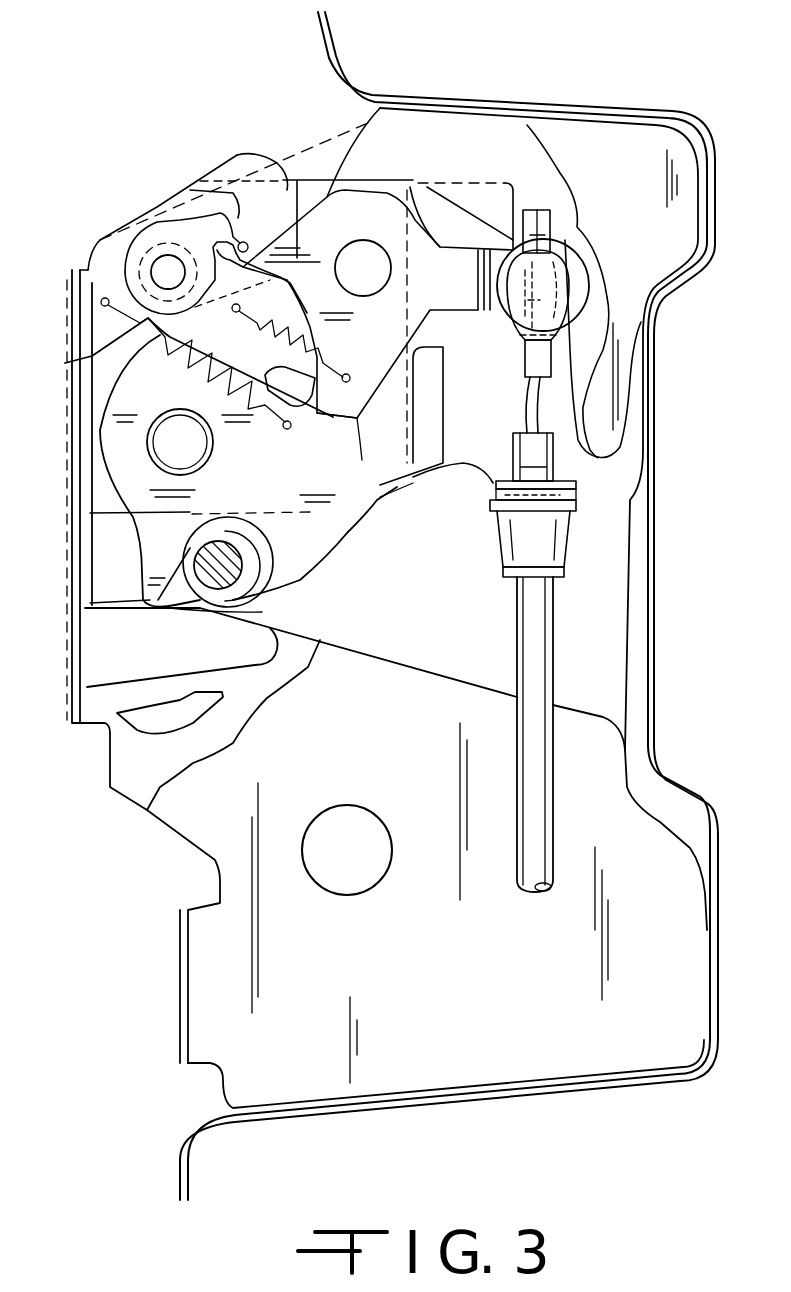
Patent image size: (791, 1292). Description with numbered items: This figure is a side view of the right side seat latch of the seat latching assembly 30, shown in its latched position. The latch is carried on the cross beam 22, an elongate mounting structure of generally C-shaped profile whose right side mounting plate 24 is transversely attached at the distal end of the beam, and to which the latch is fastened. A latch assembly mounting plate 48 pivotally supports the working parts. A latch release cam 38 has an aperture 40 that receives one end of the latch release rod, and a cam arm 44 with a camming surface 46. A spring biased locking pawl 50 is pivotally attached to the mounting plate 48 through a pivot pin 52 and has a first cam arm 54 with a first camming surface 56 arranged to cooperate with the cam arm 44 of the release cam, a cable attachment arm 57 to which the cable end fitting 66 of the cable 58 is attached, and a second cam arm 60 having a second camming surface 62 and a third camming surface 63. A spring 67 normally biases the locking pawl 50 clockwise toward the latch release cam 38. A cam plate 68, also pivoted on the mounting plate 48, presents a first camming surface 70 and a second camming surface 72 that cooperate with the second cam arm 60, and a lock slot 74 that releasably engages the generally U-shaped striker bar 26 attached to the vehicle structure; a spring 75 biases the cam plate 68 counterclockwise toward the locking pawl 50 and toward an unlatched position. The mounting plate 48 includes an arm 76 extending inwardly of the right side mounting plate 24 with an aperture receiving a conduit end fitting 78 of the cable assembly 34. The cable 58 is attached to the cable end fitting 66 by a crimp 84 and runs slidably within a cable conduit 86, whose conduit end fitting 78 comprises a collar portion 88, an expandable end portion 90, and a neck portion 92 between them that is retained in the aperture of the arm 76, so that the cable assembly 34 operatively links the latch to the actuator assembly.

The cross beam 22 is at (502, 93).
The right side mounting plate 24 is at (383, 966).
The striker bar 26 is at (270, 605).
The seat latching assembly 30 is at (166, 138).
The cable assembly 34 is at (578, 616).
The latch release cam 38 is at (133, 232).
The aperture 40 is at (163, 263).
The cam arm 44 is at (177, 230).
The camming surface 46 is at (243, 241).
The latch assembly mounting plate 48 is at (389, 108).
The locking pawl 50 is at (375, 318).
The pivot pin 52 is at (368, 238).
The first cam arm 54 is at (280, 243).
The first camming surface 56 is at (248, 242).
The cable attachment arm 57 is at (567, 267).
The cable 58 is at (550, 398).
The second cam arm 60 is at (395, 399).
The second camming surface 62 is at (340, 407).
The third camming surface 63 is at (290, 398).
The cable end fitting 66 is at (590, 272).
The spring 67 is at (255, 323).
The cam plate 68 is at (237, 473).
The first camming surface 70 is at (337, 420).
The second camming surface 72 is at (335, 545).
The lock slot 74 is at (252, 538).
The spring 75 is at (180, 392).
The arm 76 is at (573, 492).
The conduit end fitting 78 is at (580, 525).
The crimp 84 is at (530, 210).
The cable conduit 86 is at (556, 667).
The collar portion 88 is at (572, 545).
The expandable end portion 90 is at (553, 447).
The neck portion 92 is at (483, 492).